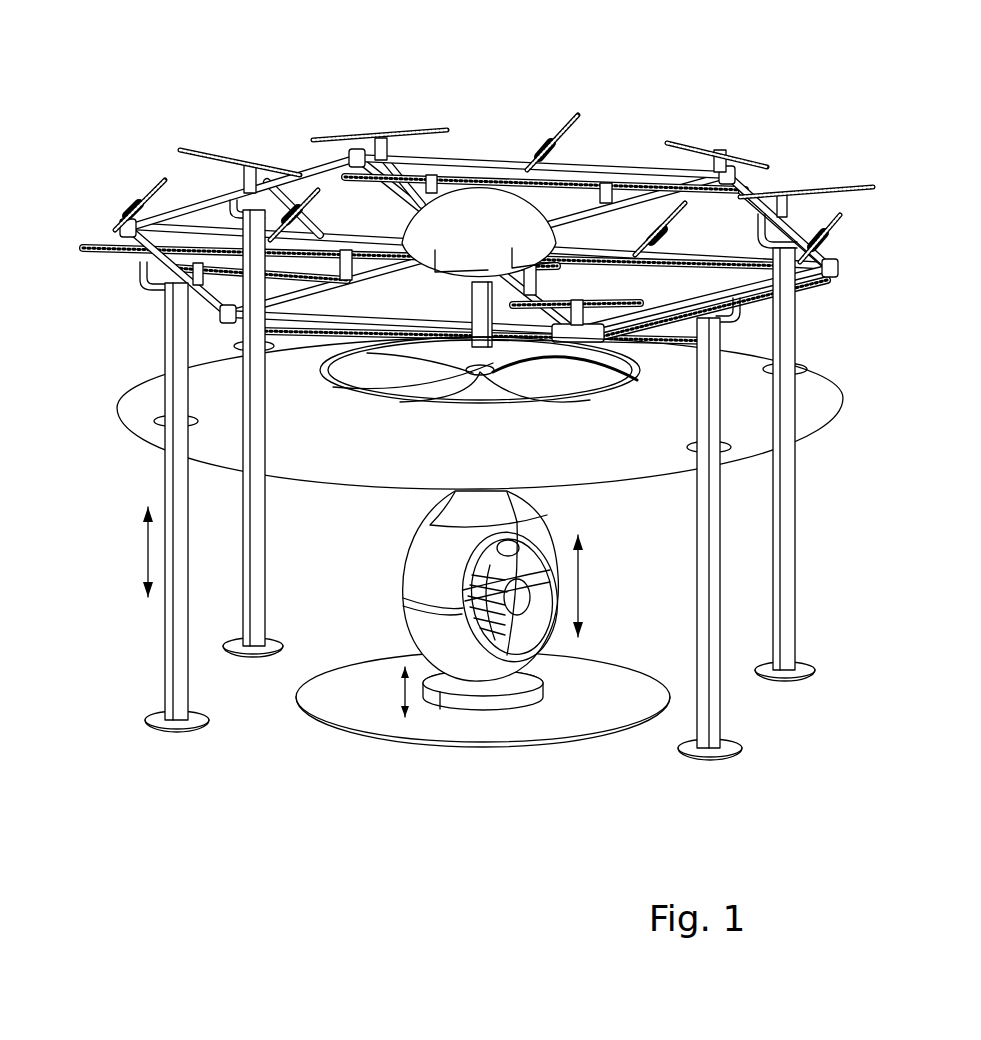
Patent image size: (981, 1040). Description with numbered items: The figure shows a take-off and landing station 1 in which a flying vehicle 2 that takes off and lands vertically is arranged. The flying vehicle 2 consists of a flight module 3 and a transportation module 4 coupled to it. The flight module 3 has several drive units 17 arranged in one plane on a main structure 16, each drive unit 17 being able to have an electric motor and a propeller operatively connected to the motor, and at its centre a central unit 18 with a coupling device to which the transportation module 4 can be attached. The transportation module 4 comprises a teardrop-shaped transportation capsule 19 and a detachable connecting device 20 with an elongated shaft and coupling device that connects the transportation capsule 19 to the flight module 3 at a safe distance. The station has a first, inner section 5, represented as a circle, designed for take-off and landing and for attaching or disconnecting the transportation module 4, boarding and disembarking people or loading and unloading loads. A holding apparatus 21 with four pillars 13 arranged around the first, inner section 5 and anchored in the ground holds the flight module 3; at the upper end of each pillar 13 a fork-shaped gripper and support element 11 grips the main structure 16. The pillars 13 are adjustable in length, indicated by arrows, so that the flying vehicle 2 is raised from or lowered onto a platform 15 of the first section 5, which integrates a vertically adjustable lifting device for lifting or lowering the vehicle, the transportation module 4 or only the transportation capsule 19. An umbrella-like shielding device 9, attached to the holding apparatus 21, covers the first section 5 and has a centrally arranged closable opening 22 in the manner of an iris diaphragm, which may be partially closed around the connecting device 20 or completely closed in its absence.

The take-off and landing station 1 is at (190, 803).
The flying vehicle 2 is at (757, 118).
The flight module 3 is at (853, 275).
The transportation module 4 is at (543, 513).
The first, inner section 5 is at (388, 708).
The shielding device 9 is at (770, 422).
The gripper and support element 11 is at (140, 277).
The pillar 13 is at (713, 667).
The platform 15 is at (513, 687).
The main structure 16 is at (187, 207).
The drive unit 17 is at (530, 162).
The central unit 18 is at (462, 208).
The transportation capsule 19 is at (433, 589).
The connecting device 20 is at (483, 359).
The holding apparatus 21 is at (124, 330).
The closable opening 22 is at (373, 397).